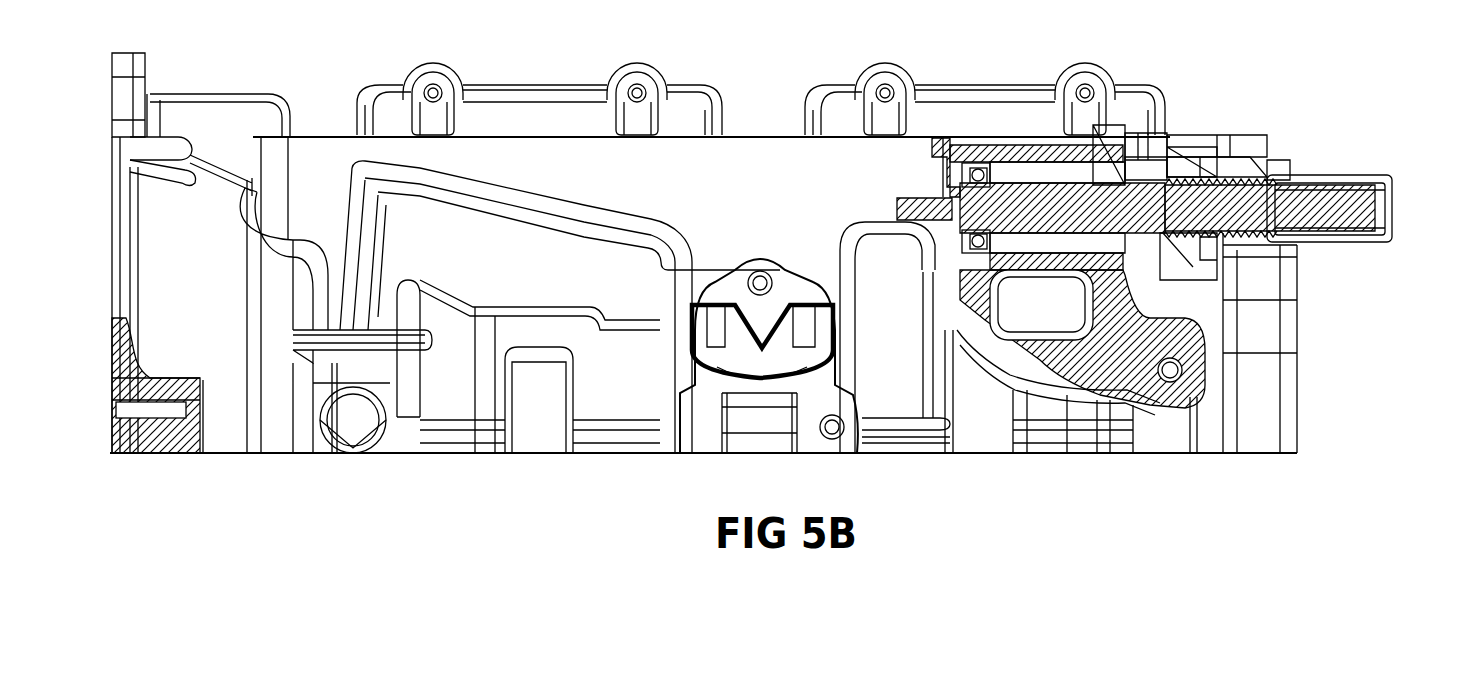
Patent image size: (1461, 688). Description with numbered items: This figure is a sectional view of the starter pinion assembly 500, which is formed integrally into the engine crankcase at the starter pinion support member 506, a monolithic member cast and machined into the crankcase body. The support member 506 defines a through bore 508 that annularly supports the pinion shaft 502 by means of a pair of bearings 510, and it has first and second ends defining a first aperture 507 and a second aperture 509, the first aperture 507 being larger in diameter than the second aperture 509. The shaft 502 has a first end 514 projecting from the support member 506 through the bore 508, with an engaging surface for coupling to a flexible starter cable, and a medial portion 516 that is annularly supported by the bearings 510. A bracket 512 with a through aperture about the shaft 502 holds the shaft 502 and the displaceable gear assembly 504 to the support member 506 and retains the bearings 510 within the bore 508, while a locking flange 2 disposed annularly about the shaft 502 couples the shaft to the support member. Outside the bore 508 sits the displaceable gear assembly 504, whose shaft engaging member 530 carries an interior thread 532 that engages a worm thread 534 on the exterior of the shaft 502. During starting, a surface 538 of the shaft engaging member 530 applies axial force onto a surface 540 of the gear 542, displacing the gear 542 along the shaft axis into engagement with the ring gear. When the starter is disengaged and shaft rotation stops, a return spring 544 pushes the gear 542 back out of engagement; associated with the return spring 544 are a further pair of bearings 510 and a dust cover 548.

The locking flange 2 is at (1062, 400).
The starter pinion assembly 500 is at (1197, 107).
The pinion shaft 502 is at (1333, 218).
The displaceable gear assembly 504 is at (1273, 146).
The starter pinion support member 506 is at (1035, 150).
The first aperture 507 is at (1105, 140).
The through bore 508 is at (1015, 175).
The second aperture 509 is at (962, 183).
The bearings 510 is at (953, 160).
The bracket 512 is at (1130, 410).
The first end 514 is at (905, 210).
The medial portion 516 is at (1012, 335).
The shaft engaging member 530 is at (1222, 263).
The interior thread 532 is at (1215, 162).
The worm thread 534 is at (1283, 165).
The surface 538 is at (1196, 252).
The surface 540 is at (1190, 162).
The gear 542 is at (1290, 253).
The return spring 544 is at (1335, 180).
The dust cover 548 is at (1392, 212).